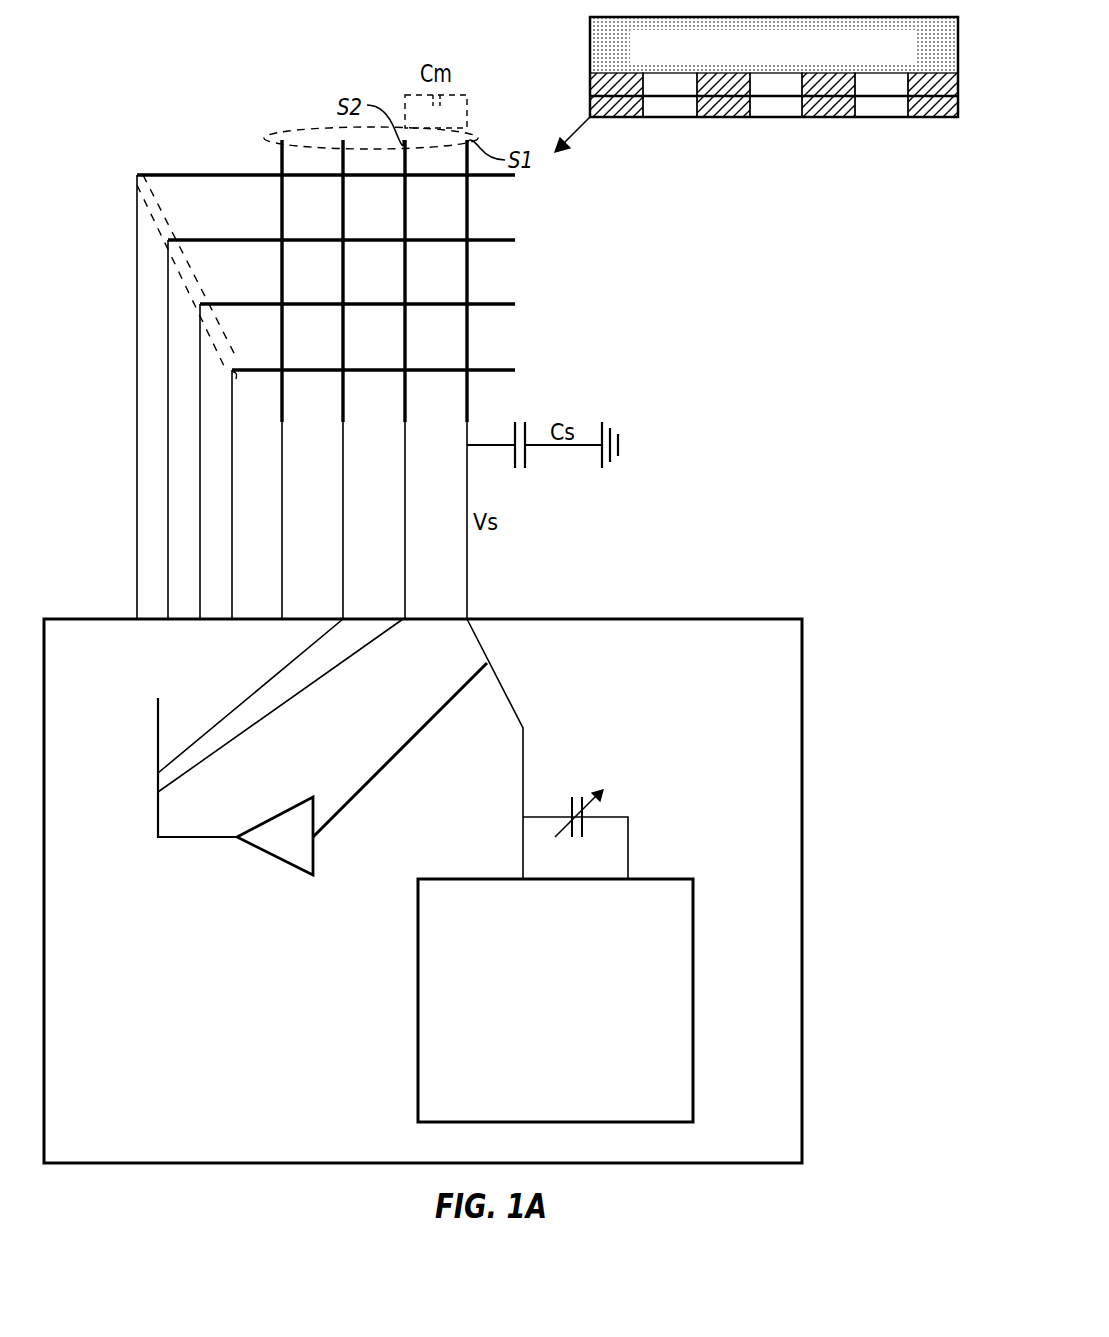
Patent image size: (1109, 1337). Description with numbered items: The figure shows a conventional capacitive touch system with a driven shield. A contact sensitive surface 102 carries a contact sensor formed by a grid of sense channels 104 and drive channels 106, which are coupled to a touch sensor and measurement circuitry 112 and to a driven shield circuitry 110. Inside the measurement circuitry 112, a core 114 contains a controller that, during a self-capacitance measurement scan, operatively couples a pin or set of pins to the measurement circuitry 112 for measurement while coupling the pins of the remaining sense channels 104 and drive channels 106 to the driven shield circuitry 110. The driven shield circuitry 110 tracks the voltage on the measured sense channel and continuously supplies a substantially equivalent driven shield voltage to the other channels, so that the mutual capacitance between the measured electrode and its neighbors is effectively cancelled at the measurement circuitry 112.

The contact sensitive surface 102 is at (510, 318).
The sense channels 104 is at (273, 140).
The drive channels 106 is at (133, 172).
The driven shield circuitry 110 is at (272, 857).
The measurement circuitry 112 is at (720, 678).
The core 114 is at (572, 1050).